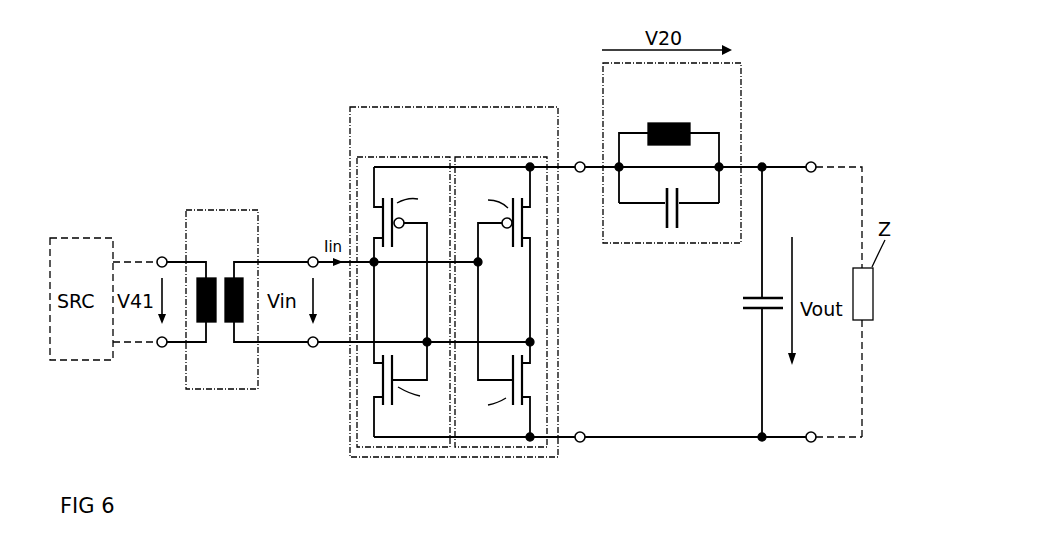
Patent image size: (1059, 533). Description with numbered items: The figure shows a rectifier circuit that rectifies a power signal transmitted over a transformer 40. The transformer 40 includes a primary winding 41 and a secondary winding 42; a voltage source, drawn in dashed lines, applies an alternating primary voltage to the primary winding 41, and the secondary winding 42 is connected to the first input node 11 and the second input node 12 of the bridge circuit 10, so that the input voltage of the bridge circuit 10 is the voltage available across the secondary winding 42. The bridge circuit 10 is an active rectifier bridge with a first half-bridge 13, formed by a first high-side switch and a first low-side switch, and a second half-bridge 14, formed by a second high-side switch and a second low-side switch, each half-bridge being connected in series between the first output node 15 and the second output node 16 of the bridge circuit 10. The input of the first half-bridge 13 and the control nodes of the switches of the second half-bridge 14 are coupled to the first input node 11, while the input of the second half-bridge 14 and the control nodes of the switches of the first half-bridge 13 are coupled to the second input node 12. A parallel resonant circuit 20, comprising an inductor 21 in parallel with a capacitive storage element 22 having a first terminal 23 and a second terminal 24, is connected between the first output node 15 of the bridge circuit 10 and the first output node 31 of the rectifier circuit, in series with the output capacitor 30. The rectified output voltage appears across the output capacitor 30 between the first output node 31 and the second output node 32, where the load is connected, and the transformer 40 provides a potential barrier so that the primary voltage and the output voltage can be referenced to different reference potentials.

The bridge circuit 10 is at (457, 107).
The first input node 11 is at (311, 256).
The second input node 12 is at (312, 349).
The first half-bridge 13 is at (408, 157).
The second half-bridge 14 is at (497, 157).
The first output node of the bridge circuit 15 is at (582, 160).
The second output node of the bridge circuit 16 is at (582, 444).
The parallel resonant circuit 20 is at (741, 93).
The inductor 21 is at (680, 123).
The capacitive storage element 22 is at (665, 215).
The first terminal of the capacitive storage element 23 is at (642, 203).
The second terminal of the capacitive storage element 24 is at (693, 203).
The output capacitor 30 is at (738, 302).
The first output node 31 is at (813, 160).
The second output node 32 is at (813, 444).
The transformer 40 is at (223, 210).
The primary winding 41 is at (210, 278).
The secondary winding 42 is at (230, 327).